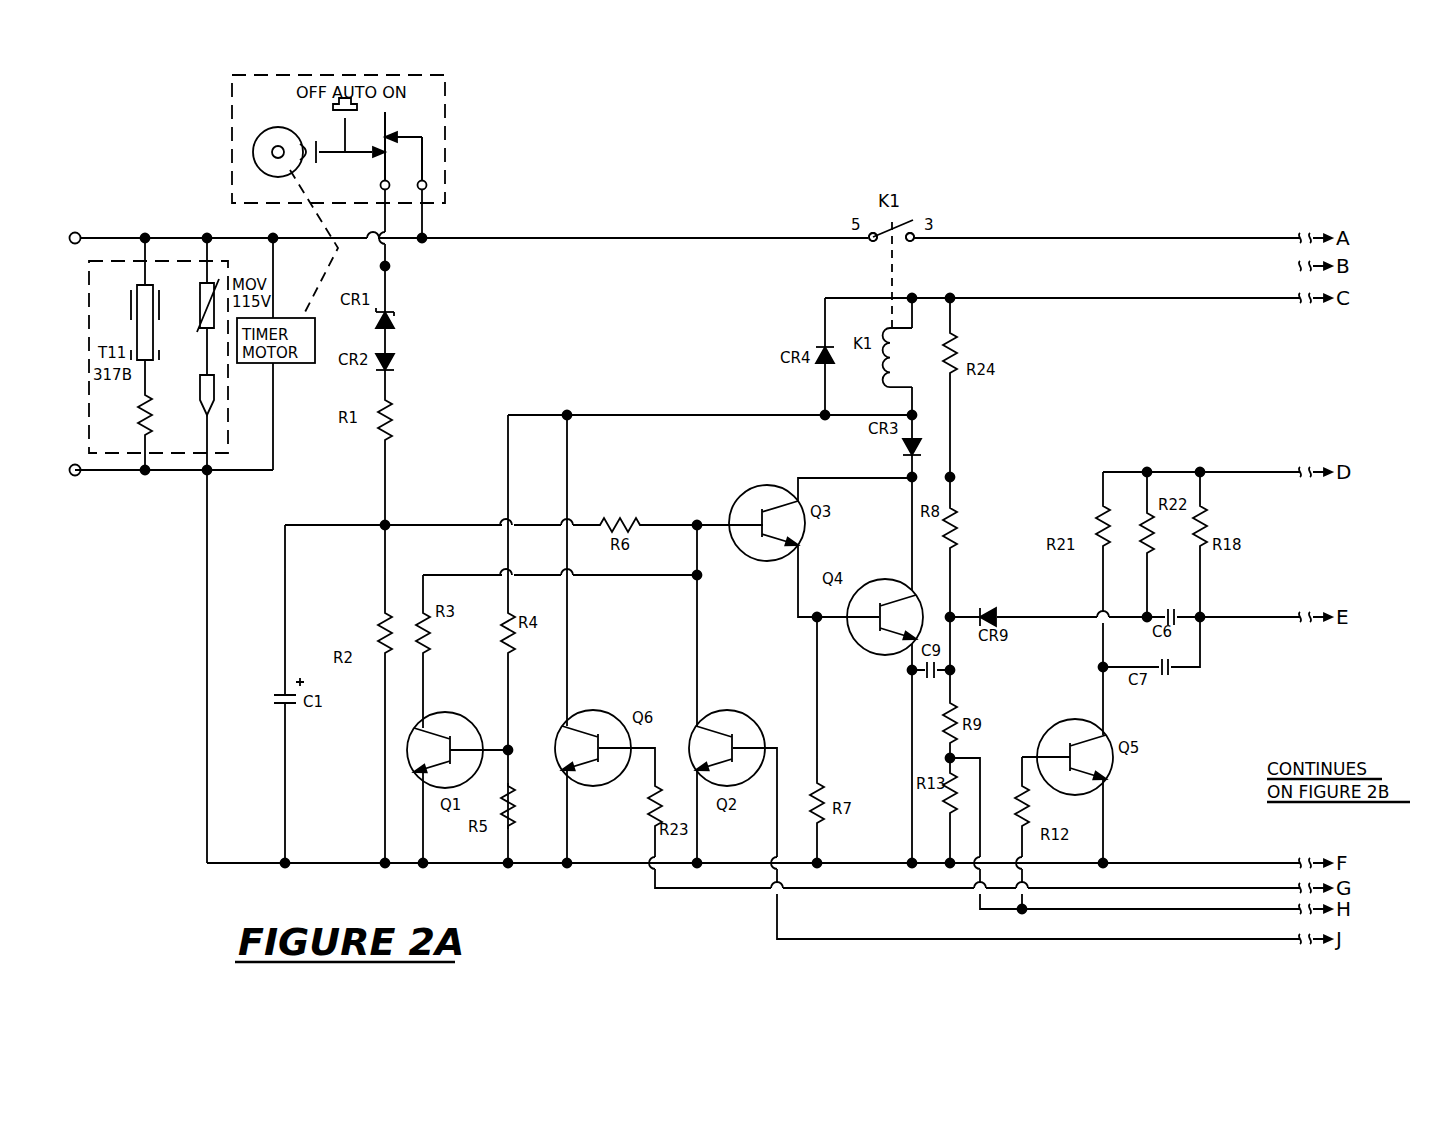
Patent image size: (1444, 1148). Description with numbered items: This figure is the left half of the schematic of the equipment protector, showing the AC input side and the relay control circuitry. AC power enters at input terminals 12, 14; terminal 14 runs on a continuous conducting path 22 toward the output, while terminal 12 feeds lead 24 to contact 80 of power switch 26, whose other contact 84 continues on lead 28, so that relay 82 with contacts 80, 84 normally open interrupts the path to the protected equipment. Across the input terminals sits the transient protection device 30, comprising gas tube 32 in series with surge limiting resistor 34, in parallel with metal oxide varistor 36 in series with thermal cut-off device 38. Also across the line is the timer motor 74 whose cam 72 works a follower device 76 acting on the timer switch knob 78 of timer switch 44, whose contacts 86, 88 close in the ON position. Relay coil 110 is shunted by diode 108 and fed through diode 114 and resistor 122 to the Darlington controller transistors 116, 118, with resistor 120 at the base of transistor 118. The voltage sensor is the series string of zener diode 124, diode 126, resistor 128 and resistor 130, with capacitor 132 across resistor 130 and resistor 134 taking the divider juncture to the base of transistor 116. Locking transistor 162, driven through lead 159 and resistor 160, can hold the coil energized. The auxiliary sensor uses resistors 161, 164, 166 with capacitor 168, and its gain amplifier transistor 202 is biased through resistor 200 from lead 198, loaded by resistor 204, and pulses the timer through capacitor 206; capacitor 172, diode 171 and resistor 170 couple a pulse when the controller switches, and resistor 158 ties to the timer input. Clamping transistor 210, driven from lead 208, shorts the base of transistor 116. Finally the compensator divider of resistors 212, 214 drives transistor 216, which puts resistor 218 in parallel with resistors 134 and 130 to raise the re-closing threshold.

The input terminal 12 is at (79, 232).
The input terminal 14 is at (70, 465).
The electrically conducting path 22 is at (568, 872).
The electrical conducting path 24 is at (660, 232).
The power switch 26 is at (928, 208).
The electrically conductive path 28 is at (1068, 236).
The transient protection device 30 is at (85, 352).
The gas tube 32 is at (135, 316).
The surge limiting resistor 34 is at (137, 430).
The metal oxide varistor 36 is at (200, 293).
The thermal cut-off device 38 is at (200, 390).
The timer switch 44 is at (450, 82).
The cam 72 is at (252, 150).
The timer motor 74 is at (296, 364).
The follower device 76 is at (340, 155).
The timer switch knob 78 is at (330, 110).
The contact 80 is at (867, 241).
The relay 82 is at (945, 297).
The contact 84 is at (912, 243).
The contact 86 is at (388, 120).
The contact 88 is at (424, 160).
The diode 108 is at (818, 346).
The relay coil 110 is at (886, 382).
The diode 114 is at (900, 448).
The transistor 116 is at (768, 488).
The transistor 118 is at (880, 580).
The resistor 120 is at (832, 798).
The resistor 122 is at (962, 358).
The zener diode 124 is at (397, 318).
The diode 126 is at (398, 362).
The resistor 128 is at (396, 436).
The resistor 130 is at (378, 650).
The capacitor 132 is at (274, 692).
The resistor 134 is at (633, 486).
The resistor 158 is at (1212, 535).
The lead 159 is at (708, 890).
The resistor 160 is at (650, 810).
The resistor 161 is at (962, 548).
The transistor 162 is at (622, 688).
The resistor 164 is at (960, 704).
The resistor 166 is at (945, 798).
The capacitor 168 is at (920, 680).
The resistor 170 is at (1142, 520).
The diode 171 is at (997, 606).
The capacitor 172 is at (1178, 608).
The lead 198 is at (1228, 906).
The resistor 200 is at (1030, 794).
The transistor 202 is at (1042, 734).
The resistor 204 is at (1096, 530).
The capacitor 206 is at (1170, 678).
The lead 208 is at (952, 940).
The transistor 210 is at (750, 720).
The resistor 212 is at (514, 656).
The resistor 214 is at (513, 827).
The transistor 216 is at (476, 692).
The resistor 218 is at (428, 662).